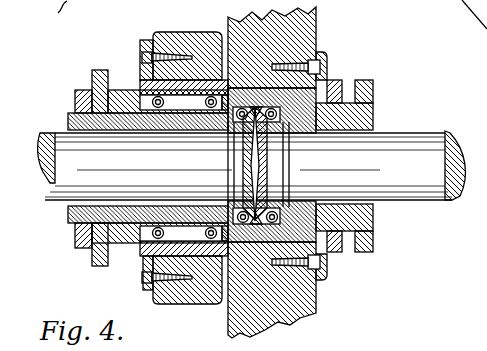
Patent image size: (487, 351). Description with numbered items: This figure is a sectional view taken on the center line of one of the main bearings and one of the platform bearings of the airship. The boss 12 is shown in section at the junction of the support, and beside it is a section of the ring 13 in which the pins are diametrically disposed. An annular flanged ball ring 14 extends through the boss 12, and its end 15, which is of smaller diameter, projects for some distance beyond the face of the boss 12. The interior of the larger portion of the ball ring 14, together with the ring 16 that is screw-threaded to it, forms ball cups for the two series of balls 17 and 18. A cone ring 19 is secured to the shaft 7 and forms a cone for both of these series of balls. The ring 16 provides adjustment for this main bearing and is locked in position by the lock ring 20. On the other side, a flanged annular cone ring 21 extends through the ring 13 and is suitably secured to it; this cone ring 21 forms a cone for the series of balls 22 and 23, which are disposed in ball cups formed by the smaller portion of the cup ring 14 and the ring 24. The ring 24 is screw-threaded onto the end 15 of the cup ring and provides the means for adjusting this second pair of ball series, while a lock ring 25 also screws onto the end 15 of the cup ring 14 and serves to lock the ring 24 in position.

The shaft 7 is at (46, 178).
The boss 12 is at (315, 300).
The ring 13 is at (205, 28).
The annular flanged ball ring 14 is at (318, 58).
The end of ball ring 15 is at (72, 216).
The ring 16 is at (372, 84).
The series of balls 17 is at (240, 128).
The series of balls 18 is at (270, 130).
The cone ring 19 is at (262, 167).
The lock ring 20 is at (337, 80).
The flanged annular cone ring 21 is at (141, 260).
The series of balls 22 is at (214, 208).
The series of balls 23 is at (151, 214).
The ring 24 is at (104, 70).
The lock ring 25 is at (88, 90).